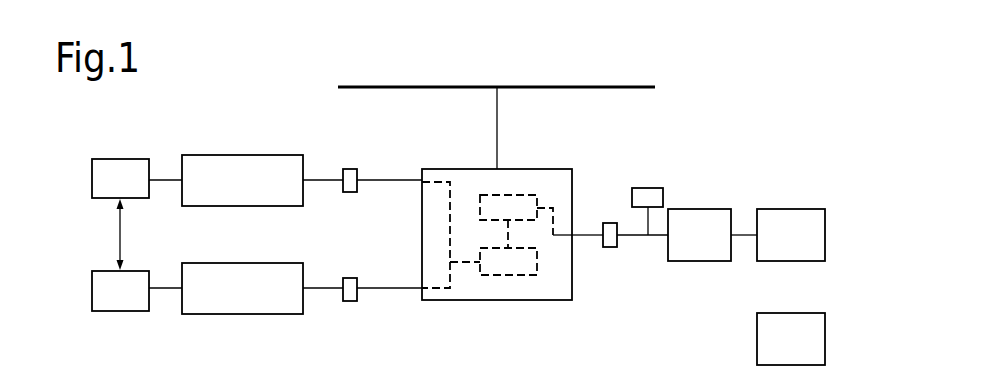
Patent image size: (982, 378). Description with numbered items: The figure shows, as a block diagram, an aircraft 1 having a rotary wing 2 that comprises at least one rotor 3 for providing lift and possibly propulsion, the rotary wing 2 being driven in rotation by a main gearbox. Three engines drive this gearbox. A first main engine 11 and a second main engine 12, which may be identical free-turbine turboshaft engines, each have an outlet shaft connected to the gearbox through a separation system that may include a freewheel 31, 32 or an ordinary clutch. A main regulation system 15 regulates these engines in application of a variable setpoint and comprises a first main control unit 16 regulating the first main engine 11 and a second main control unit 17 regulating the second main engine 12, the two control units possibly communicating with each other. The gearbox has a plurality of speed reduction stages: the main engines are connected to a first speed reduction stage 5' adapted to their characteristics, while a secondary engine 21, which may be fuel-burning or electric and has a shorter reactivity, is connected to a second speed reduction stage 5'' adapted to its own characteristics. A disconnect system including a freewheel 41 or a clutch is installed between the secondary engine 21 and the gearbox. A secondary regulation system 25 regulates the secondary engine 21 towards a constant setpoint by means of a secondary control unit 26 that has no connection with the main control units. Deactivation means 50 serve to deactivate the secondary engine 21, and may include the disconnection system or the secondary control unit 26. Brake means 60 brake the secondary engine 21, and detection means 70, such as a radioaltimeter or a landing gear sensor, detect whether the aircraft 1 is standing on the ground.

The aircraft 1 is at (826, 142).
The rotary wing 2 is at (693, 70).
The rotor 3 is at (448, 80).
The first speed reduction stage 5' is at (492, 308).
The second speed reduction stage 5'' is at (483, 166).
The first main engine 11 is at (252, 193).
The second main engine 12 is at (252, 303).
The main regulation system 15 is at (62, 293).
The first main control unit 16 is at (133, 193).
The second main control unit 17 is at (133, 305).
The secondary engine 21 is at (717, 250).
The secondary regulation system 25 is at (850, 236).
The secondary control unit 26 is at (807, 250).
The freewheel 31 is at (351, 160).
The freewheel 32 is at (351, 311).
The freewheel 41 is at (609, 214).
The deactivation means 50 is at (754, 271).
The brake means 60 is at (652, 194).
The detection means 70 is at (807, 353).